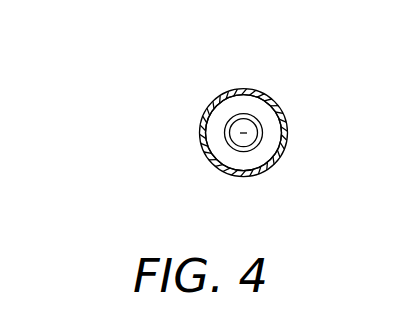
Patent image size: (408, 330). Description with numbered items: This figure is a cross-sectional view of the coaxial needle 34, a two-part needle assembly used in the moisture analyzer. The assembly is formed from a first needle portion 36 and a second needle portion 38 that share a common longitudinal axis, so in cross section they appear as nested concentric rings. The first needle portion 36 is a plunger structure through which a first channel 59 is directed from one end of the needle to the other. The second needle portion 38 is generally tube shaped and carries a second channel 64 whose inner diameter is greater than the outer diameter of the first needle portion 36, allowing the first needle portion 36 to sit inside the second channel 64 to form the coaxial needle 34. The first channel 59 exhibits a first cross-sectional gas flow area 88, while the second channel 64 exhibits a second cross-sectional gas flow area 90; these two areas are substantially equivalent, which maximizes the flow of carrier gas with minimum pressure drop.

The coaxial needle 34 is at (62, 212).
The first needle portion 36 is at (240, 152).
The second needle portion 38 is at (267, 95).
The first channel 59 is at (244, 130).
The second channel 64 is at (213, 137).
The first cross-sectional gas flow area 88 is at (257, 133).
The second cross-sectional gas flow area 90 is at (267, 157).